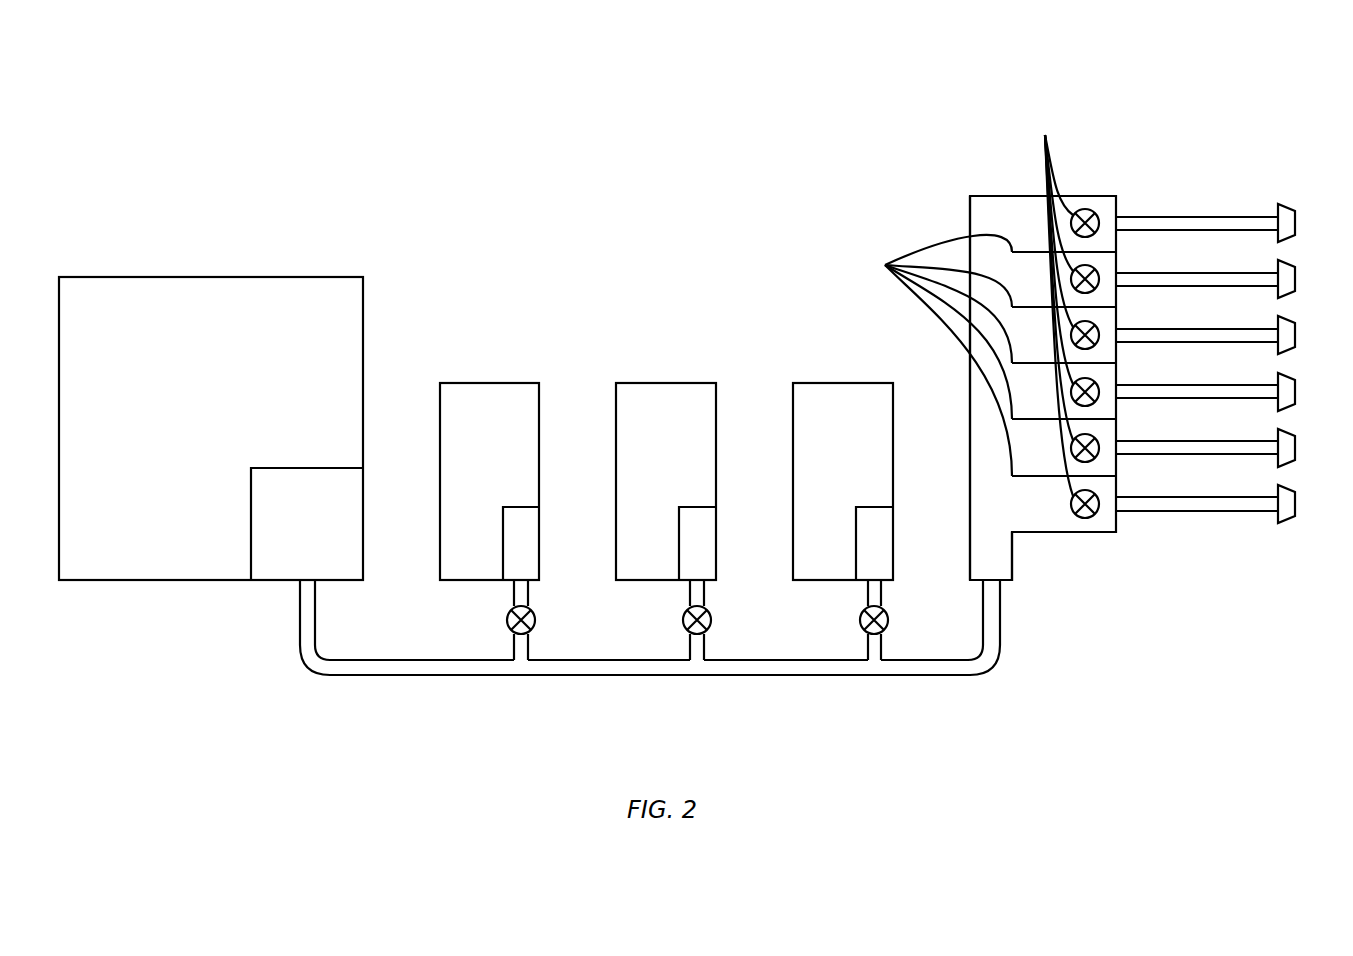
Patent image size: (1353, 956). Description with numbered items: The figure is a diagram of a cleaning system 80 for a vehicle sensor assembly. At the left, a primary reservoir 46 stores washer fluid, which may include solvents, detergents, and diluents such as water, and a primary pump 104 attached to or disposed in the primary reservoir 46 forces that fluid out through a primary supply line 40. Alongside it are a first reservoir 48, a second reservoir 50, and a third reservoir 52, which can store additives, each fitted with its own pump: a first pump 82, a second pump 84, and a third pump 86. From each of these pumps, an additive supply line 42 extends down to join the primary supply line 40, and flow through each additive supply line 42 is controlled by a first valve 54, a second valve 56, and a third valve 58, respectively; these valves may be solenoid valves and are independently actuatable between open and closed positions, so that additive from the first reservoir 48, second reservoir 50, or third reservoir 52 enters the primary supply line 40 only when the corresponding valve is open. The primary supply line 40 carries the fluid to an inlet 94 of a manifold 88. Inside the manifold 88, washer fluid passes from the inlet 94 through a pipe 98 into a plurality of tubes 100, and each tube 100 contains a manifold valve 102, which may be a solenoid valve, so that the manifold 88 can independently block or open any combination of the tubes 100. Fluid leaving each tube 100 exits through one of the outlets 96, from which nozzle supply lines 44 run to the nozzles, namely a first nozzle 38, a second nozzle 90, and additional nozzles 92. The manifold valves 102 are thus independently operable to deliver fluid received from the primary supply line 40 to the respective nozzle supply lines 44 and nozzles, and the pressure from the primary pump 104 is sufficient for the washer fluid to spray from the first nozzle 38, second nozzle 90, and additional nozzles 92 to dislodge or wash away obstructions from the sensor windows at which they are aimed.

The cleaning system 80 is at (172, 108).
The primary reservoir 46 is at (323, 277).
The primary pump 104 is at (365, 493).
The first reservoir 48 is at (520, 383).
The second reservoir 50 is at (697, 383).
The third reservoir 52 is at (875, 383).
The first pump 82 is at (539, 522).
The second pump 84 is at (716, 522).
The third pump 86 is at (893, 522).
The primary supply line 40 is at (907, 676).
The additive supply lines 42 is at (514, 648).
The first valve 54 is at (534, 611).
The second valve 56 is at (710, 611).
The third valve 58 is at (887, 611).
The manifold 88 is at (992, 196).
The pipe 98 is at (970, 212).
The inlet 94 is at (1012, 550).
The tubes 100 is at (924, 355).
The manifold valves 102 is at (1047, 301).
The outlets 96 is at (1116, 212).
The nozzle supply lines 44 is at (1221, 325).
The first nozzle 38 is at (1297, 220).
The second nozzle 90 is at (1297, 276).
The additional nozzles 92 is at (1297, 332).